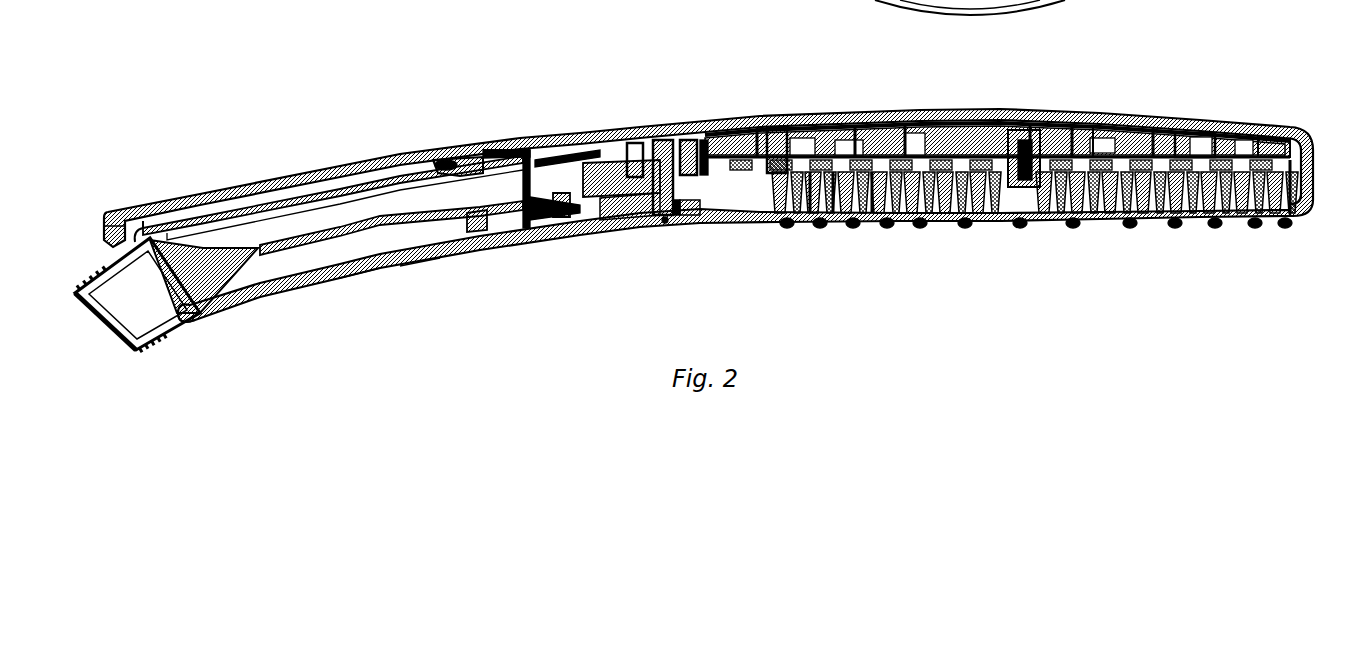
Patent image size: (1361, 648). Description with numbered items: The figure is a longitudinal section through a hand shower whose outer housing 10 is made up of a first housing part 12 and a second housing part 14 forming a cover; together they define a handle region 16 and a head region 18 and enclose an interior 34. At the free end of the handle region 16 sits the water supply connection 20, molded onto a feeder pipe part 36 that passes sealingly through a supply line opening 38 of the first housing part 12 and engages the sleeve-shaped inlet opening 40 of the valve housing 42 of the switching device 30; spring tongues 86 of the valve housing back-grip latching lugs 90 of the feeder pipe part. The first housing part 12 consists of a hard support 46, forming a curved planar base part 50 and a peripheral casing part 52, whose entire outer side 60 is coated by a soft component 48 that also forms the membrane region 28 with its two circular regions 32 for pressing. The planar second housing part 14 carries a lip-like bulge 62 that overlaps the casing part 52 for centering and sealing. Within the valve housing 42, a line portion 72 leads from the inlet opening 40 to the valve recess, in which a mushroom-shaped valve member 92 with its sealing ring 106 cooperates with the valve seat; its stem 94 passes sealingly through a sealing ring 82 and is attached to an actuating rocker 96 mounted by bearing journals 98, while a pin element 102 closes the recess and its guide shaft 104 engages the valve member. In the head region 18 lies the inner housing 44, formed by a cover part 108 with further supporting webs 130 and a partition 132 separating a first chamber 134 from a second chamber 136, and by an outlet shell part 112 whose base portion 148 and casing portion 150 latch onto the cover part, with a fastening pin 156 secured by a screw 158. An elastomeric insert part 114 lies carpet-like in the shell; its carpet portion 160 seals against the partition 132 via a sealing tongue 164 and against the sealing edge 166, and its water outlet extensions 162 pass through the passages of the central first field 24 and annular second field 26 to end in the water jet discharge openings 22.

The outer housing 10 is at (138, 202).
The first housing part 12 is at (220, 313).
The second housing part 14 is at (290, 170).
The handle region 16 is at (377, 157).
The head region 18 is at (823, 110).
The water supply connection 20 is at (148, 337).
The water jet discharge openings 22 is at (1020, 228).
The central first field 24 is at (942, 213).
The annular second field 26 is at (1215, 230).
The membrane region 28 is at (630, 227).
The switching device 30 is at (577, 243).
The circular regions 32 is at (560, 243).
The interior 34 is at (343, 183).
The feeder pipe part 36 is at (337, 270).
The supply line opening 38 is at (175, 317).
The inlet opening 40 is at (507, 133).
The valve housing 42 is at (553, 147).
The inner housing 44 is at (927, 107).
The support 46 is at (377, 273).
The soft component 48 is at (453, 257).
The base part 50 is at (413, 267).
The casing part 52 is at (1310, 212).
The outer side 60 is at (270, 303).
The bulge 62 is at (127, 208).
The line portion 72 is at (615, 93).
The sealing ring 82 is at (737, 223).
The spring tongues 86 is at (442, 147).
The latching lugs 90 is at (463, 147).
The valve member 92 is at (663, 117).
The stem 94 is at (677, 228).
The actuating rocker 96 is at (665, 228).
The bearing journals 98 is at (618, 225).
The pin element 102 is at (693, 117).
The guide shaft 104 is at (680, 117).
The sealing ring 106 is at (637, 117).
The cover part 108 is at (1153, 113).
The outlet shell part 112 is at (872, 228).
The insert part 114 is at (1093, 110).
The further supporting webs 130 is at (1123, 107).
The partition 132 is at (1170, 230).
The first chamber 134 is at (905, 107).
The second chamber 136 is at (757, 80).
The base portion 148 is at (833, 228).
The casing portion 150 is at (1285, 230).
The fastening pin 156 is at (1072, 107).
The screw 158 is at (1030, 107).
The carpet portion 160 is at (853, 105).
The water outlet extensions 162 is at (810, 228).
The sealing tongue 164 is at (1185, 117).
The sealing edge 166 is at (1263, 127).